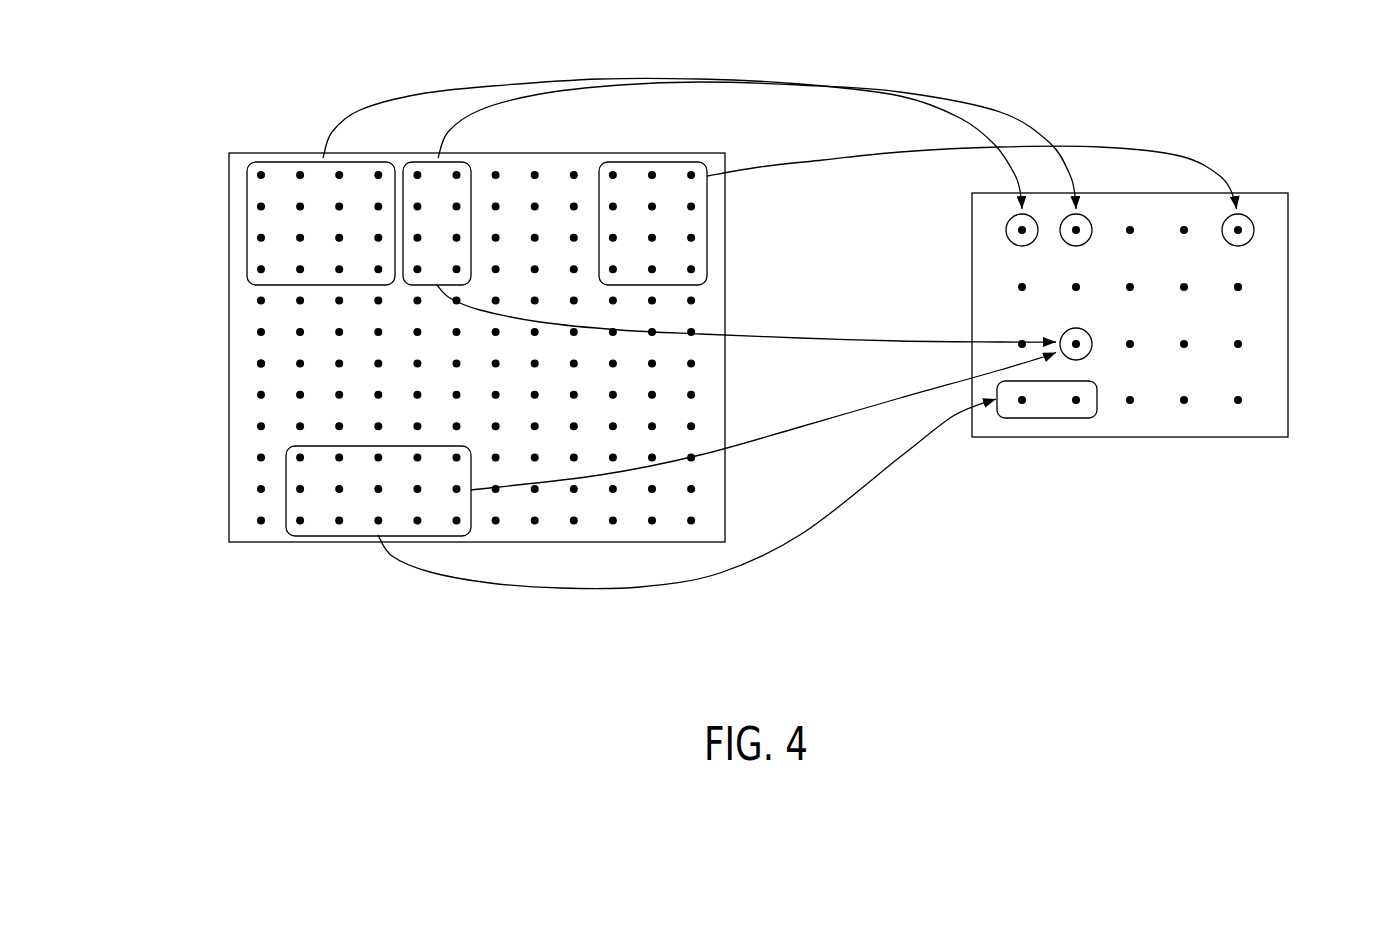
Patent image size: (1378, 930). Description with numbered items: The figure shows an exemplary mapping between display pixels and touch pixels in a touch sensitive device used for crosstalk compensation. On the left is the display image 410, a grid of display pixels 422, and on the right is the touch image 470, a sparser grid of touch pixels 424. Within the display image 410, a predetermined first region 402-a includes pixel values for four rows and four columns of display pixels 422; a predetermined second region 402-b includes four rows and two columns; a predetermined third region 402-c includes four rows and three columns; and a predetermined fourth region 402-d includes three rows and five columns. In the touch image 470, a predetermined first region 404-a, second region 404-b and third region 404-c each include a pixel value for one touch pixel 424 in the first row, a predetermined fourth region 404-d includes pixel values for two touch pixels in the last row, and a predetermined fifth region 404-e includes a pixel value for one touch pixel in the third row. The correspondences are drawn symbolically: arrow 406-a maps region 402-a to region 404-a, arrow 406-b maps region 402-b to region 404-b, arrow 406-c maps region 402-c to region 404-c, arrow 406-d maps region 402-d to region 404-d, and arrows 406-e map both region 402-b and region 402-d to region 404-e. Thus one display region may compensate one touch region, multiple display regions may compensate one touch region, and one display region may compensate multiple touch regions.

The display image 410 is at (545, 598).
The display pixels 422 is at (261, 364).
The predetermined first region 402-a is at (247, 193).
The predetermined second region 402-b is at (485, 170).
The predetermined third region 402-c is at (662, 157).
The predetermined fourth region 402-d is at (328, 536).
The arrow 406-a is at (492, 88).
The arrow 406-b is at (880, 85).
The arrow 406-c is at (823, 162).
The arrow 406-d is at (803, 533).
The arrow 406-e is at (793, 337).
The touch image 470 is at (1177, 446).
The touch pixel 424 is at (1240, 287).
The predetermined first region 404-a is at (1006, 228).
The predetermined second region 404-b is at (1090, 243).
The predetermined third region 404-c is at (1255, 232).
The predetermined fourth region 404-d is at (1057, 419).
The predetermined fifth region 404-e is at (1090, 335).